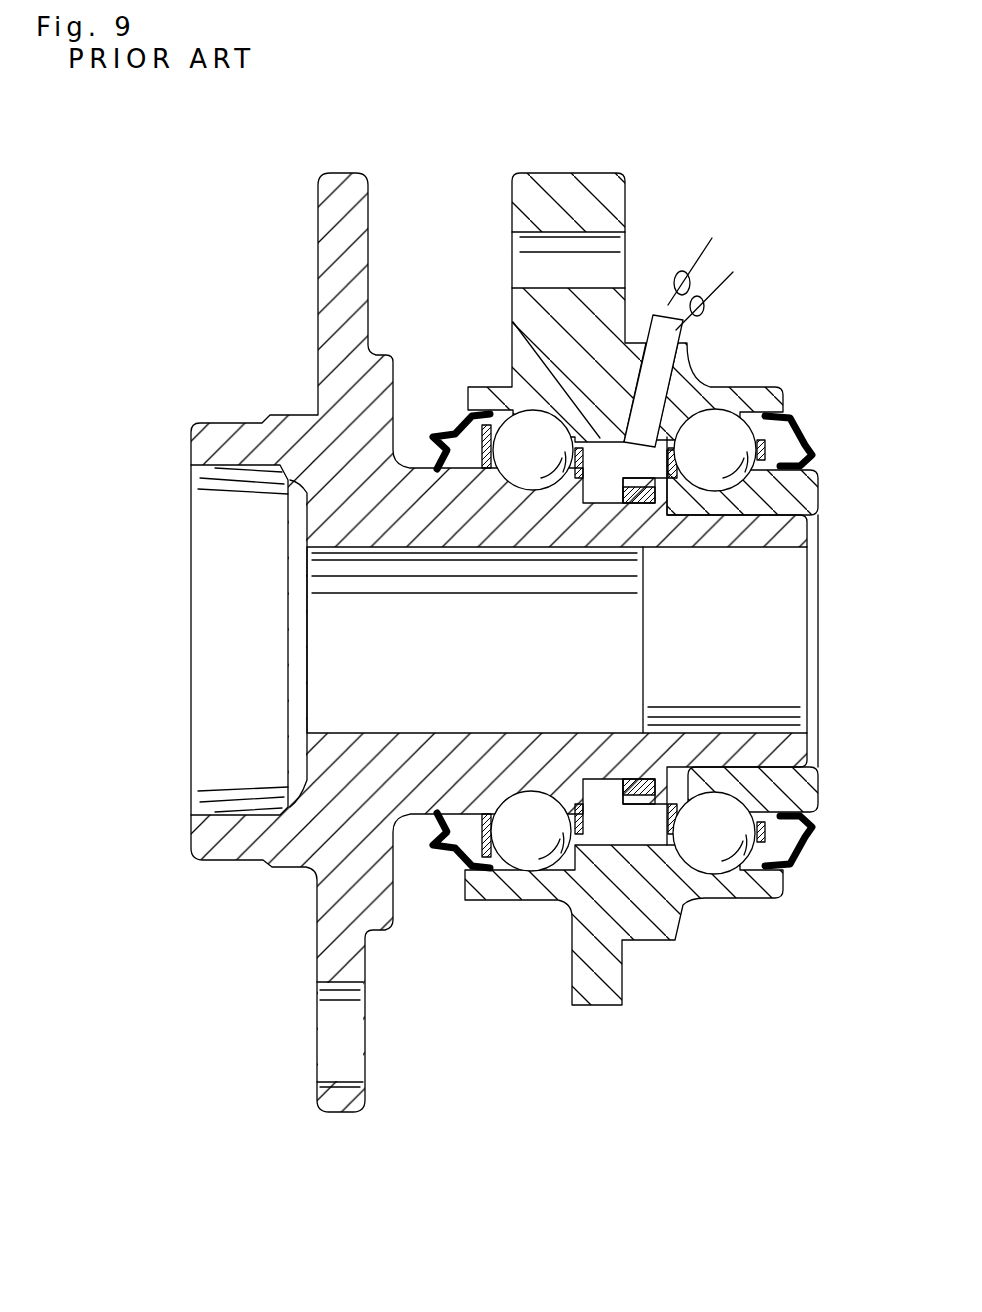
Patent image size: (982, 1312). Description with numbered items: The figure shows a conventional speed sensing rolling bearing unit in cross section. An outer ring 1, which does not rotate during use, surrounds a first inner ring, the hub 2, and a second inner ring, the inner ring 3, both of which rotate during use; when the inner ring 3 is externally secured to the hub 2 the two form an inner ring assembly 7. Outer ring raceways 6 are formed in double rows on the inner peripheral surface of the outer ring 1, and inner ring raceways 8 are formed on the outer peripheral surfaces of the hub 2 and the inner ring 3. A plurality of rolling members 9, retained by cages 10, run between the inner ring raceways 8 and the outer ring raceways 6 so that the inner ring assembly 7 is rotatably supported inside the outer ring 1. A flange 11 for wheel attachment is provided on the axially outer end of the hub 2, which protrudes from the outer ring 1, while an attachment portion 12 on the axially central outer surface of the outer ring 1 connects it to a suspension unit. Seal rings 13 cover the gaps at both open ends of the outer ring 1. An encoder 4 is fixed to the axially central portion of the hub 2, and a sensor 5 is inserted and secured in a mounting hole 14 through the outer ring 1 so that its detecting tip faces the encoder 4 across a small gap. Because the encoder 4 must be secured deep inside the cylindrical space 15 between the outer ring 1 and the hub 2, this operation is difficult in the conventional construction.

The outer ring 1 is at (707, 398).
The hub 2 is at (583, 537).
The inner ring 3 is at (810, 487).
The encoder 4 is at (655, 500).
The sensor 5 is at (690, 398).
The outer ring raceways 6 is at (511, 380).
The inner ring assembly 7 is at (302, 880).
The inner ring raceways 8 is at (527, 795).
The rolling members 9 is at (510, 440).
The cages 10 is at (468, 863).
The flange 11 is at (324, 1094).
The attachment portion 12 is at (568, 193).
The seal rings 13 is at (460, 425).
The mounting hole 14 is at (640, 315).
The cylindrical space 15 is at (513, 322).